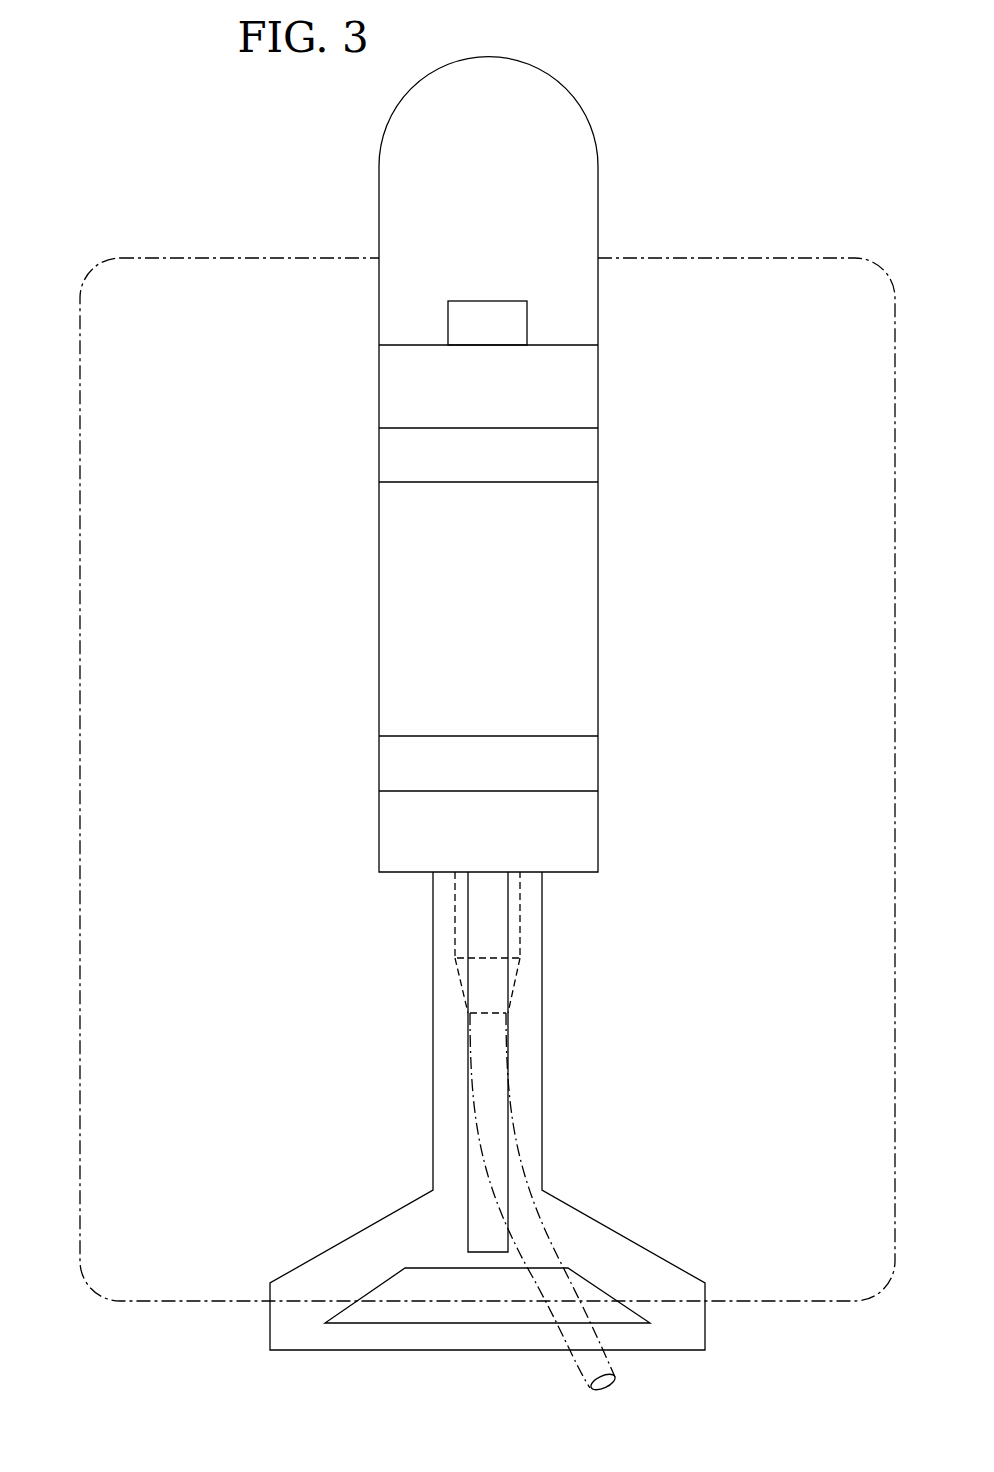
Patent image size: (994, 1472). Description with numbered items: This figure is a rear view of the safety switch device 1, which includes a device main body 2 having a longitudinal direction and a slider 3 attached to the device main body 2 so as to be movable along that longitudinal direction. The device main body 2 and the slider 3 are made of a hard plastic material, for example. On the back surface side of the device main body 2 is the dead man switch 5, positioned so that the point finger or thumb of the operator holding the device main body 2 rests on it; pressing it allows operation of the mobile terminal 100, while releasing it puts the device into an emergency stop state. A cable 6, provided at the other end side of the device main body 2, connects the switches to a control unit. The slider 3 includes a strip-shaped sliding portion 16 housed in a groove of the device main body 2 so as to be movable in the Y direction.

The safety switch device 1 is at (210, 147).
The device main body 2 is at (449, 464).
The slider 3 is at (487, 1111).
The dead man switch 5 is at (488, 300).
The cable 6 is at (543, 1222).
The sliding portion 16 is at (433, 1018).
The mobile terminal 100 is at (118, 260).